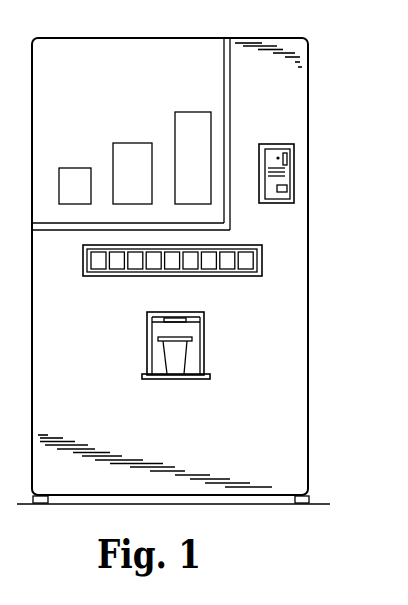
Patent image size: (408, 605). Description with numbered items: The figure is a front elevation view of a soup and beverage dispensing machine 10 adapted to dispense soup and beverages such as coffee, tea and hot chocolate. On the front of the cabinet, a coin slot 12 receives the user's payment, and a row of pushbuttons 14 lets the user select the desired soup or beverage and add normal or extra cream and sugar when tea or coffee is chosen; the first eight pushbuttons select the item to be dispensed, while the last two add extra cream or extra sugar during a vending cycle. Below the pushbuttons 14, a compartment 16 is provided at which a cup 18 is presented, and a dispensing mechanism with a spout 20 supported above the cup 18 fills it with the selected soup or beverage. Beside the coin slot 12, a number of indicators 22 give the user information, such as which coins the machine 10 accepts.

The soup and beverage dispensing machine 10 is at (308, 104).
The coin slot 12 is at (287, 160).
The pushbuttons 14 is at (270, 264).
The compartment 16 is at (204, 350).
The cup 18 is at (177, 360).
The spout 20 is at (172, 319).
The indicators 22 is at (289, 177).